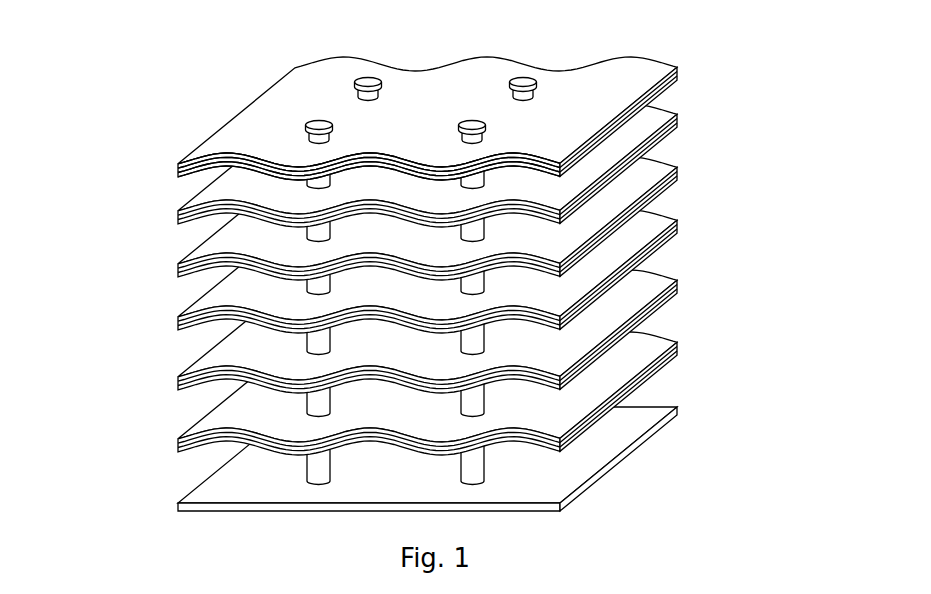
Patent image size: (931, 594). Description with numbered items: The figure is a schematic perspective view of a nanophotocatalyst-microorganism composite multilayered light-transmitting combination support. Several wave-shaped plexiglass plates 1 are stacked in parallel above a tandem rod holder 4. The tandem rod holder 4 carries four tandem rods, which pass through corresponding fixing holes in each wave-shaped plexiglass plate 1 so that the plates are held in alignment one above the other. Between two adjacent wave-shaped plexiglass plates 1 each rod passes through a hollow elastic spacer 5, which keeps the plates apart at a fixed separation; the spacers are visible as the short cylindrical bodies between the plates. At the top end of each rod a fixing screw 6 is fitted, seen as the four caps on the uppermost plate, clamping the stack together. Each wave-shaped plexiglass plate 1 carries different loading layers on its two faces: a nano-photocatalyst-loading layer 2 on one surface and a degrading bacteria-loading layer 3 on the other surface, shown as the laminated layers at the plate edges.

The wave-shaped plexiglass plate 1 is at (237, 167).
The nano-photocatalyst-loading layer 2 is at (183, 164).
The degrading bacteria-loading layer 3 is at (225, 171).
The tandem rod holder 4 is at (252, 493).
The hollow elastic spacer 5 is at (470, 468).
The fixing screw 6 is at (523, 83).